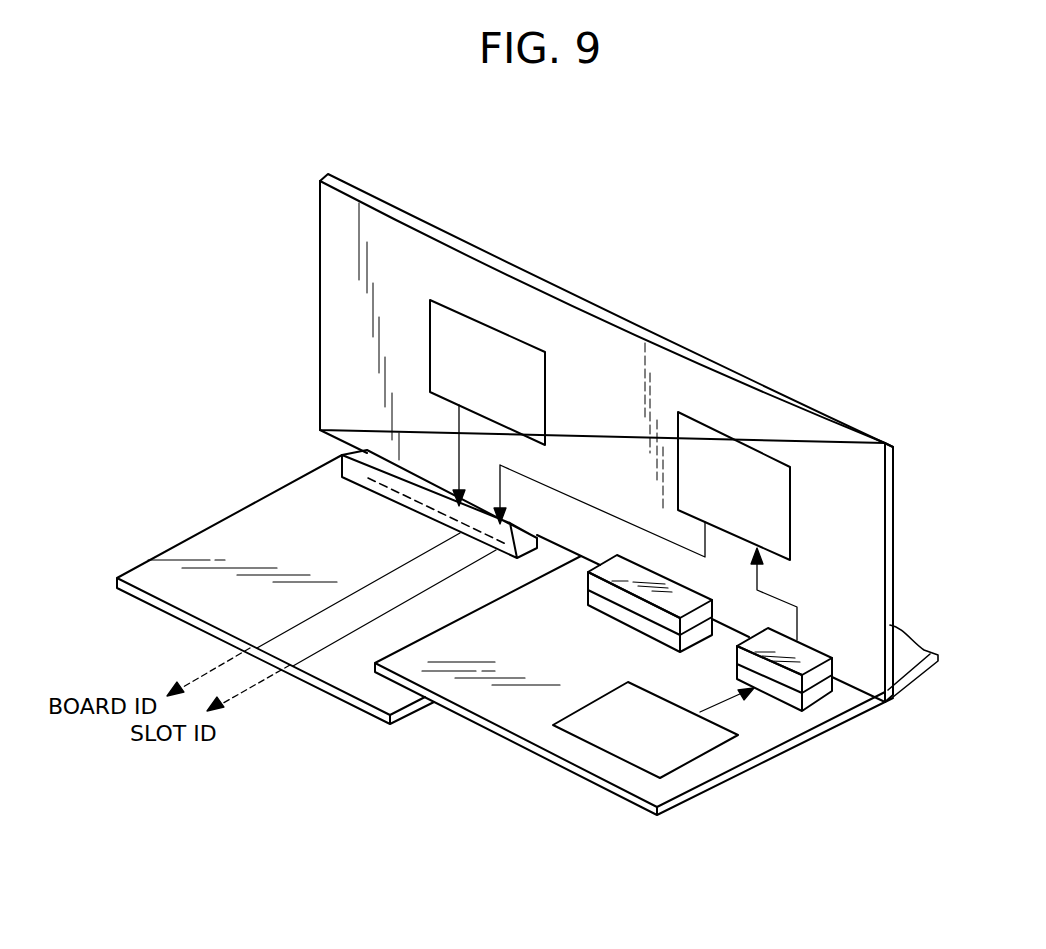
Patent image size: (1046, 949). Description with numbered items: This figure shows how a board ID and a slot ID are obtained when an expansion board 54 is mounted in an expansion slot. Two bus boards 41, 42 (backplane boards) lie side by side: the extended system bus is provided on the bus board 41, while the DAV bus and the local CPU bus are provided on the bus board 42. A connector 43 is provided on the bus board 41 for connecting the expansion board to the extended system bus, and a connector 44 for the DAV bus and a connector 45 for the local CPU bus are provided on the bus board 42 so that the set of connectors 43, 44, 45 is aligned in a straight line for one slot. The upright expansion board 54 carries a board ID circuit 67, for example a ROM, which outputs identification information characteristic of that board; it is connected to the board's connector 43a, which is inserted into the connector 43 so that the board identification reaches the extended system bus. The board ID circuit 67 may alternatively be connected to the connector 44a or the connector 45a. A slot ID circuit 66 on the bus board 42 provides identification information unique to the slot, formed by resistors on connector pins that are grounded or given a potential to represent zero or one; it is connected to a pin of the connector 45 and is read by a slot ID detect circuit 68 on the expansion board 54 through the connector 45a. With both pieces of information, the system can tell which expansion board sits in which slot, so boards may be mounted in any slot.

The bus board 41 is at (243, 548).
The bus board 42 is at (510, 718).
The connector 43 is at (367, 504).
The connector 43a is at (432, 505).
The connector 44 is at (631, 616).
The connector 44a is at (655, 598).
The connector 45 is at (817, 706).
The connector 45a is at (776, 690).
The expansion board 54 is at (507, 304).
The slot ID circuit 66 is at (700, 757).
The board ID circuit 67 is at (545, 399).
The slot ID detect circuit 68 is at (790, 506).